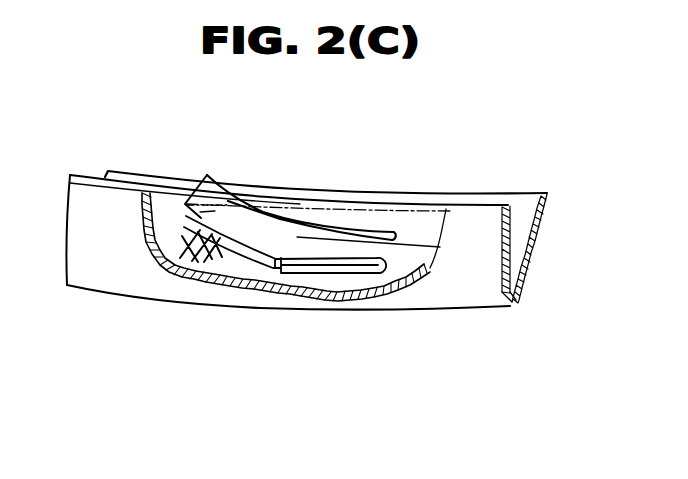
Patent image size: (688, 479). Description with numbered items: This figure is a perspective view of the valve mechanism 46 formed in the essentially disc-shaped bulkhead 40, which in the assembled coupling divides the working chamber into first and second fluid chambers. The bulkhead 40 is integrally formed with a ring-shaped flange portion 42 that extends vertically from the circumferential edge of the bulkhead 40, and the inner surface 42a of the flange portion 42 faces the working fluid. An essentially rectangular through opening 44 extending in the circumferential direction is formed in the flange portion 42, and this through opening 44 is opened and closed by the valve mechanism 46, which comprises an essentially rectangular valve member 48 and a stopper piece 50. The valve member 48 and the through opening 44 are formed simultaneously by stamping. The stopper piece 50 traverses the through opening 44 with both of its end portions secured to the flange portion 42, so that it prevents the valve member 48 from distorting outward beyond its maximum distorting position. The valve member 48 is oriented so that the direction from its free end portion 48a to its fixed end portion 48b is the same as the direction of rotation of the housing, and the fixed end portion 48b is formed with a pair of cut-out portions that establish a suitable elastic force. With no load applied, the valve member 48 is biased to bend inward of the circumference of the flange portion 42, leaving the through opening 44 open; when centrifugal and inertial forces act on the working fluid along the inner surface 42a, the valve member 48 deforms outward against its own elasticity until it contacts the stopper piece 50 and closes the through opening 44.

The bulkhead 40 is at (82, 275).
The flange portion 42 is at (537, 254).
The inner surface of the flange portion 42a is at (421, 230).
The through opening 44 is at (165, 175).
The valve mechanism 46 is at (232, 312).
The valve member 48 is at (266, 217).
The free end portion 48a is at (205, 186).
The fixed end portion 48b is at (393, 258).
The stopper piece 50 is at (280, 274).